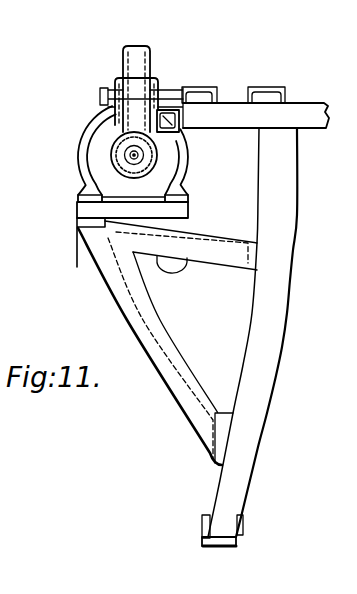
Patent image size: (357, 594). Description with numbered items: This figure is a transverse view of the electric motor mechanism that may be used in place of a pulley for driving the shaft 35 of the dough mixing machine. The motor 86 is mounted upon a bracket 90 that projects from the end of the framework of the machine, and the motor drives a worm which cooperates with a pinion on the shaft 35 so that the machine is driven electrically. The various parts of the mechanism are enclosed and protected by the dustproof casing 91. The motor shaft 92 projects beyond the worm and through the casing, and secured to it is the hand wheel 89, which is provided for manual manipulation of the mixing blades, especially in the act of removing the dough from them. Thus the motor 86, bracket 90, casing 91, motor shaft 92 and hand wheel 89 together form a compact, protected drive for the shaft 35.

The shaft 35 is at (100, 96).
The motor 86 is at (92, 158).
The hand wheel 89 is at (158, 156).
The bracket 90 is at (125, 293).
The dustproof casing 91 is at (139, 62).
The motor shaft 92 is at (129, 152).